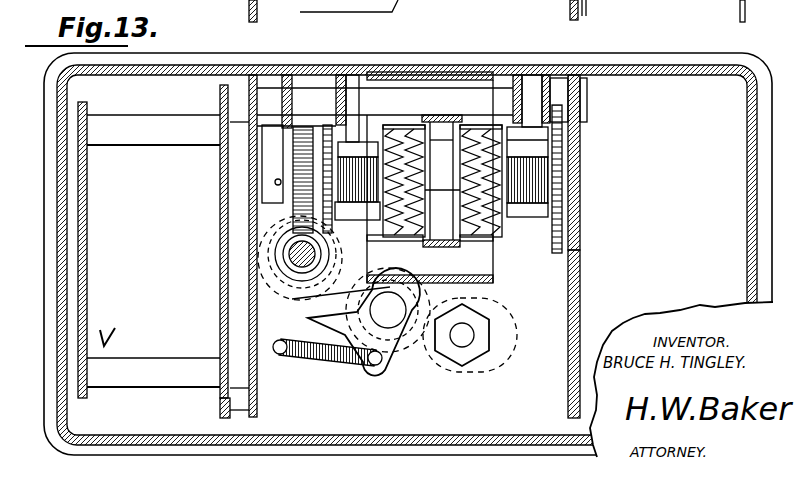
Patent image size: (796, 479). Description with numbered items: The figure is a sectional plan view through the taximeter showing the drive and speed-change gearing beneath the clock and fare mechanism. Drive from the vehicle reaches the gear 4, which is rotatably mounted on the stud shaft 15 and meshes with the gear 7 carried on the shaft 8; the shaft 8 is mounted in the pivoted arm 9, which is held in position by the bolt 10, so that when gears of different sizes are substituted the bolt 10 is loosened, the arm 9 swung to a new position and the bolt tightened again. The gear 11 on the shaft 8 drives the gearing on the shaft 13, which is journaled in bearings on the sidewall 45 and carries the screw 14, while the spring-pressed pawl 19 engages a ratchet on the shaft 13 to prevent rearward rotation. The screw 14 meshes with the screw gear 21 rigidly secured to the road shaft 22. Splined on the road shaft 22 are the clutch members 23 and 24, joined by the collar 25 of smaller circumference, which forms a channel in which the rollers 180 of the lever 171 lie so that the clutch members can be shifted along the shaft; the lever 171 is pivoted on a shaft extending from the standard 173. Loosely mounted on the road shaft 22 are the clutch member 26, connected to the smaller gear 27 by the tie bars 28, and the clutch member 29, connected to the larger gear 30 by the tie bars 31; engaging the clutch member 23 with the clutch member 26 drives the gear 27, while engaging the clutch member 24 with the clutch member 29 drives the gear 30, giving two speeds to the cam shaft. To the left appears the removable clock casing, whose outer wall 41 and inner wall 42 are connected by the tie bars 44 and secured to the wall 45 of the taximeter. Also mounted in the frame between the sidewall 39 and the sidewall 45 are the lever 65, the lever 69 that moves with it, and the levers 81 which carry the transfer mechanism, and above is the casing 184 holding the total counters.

The gear 4 is at (448, 265).
The gear 7 is at (310, 328).
The shaft 8 is at (379, 317).
The pivoted arm 9 is at (430, 372).
The bolt 10 is at (474, 335).
The gear 11 is at (356, 372).
The shaft 13 is at (292, 256).
The screw 14 is at (280, 268).
The stud shaft 15 is at (417, 248).
The spring-pressed pawl 19 is at (332, 294).
The screw gear 21 is at (290, 180).
The road shaft 22 is at (272, 175).
The clutch member 23 is at (412, 127).
The clutch member 24 is at (497, 127).
The collar 25 is at (442, 180).
The clutch member 26 is at (392, 127).
The gear 27 is at (328, 125).
The tie bars 28 is at (352, 147).
The clutch member 29 is at (523, 90).
The gear 30 is at (564, 160).
The tie bars 31 is at (552, 225).
The sidewall 39 is at (570, 292).
The outer wall 41 is at (85, 258).
The inner wall 42 is at (222, 218).
The tie bars 44 is at (143, 364).
The sidewall 45 is at (260, 388).
The lever 65 is at (283, 93).
The lever 69 is at (563, 82).
The levers 81 is at (332, 72).
The lever 171 is at (438, 115).
The standard 173 is at (400, 72).
The rollers 180 is at (447, 127).
The casing 184 is at (691, 12).